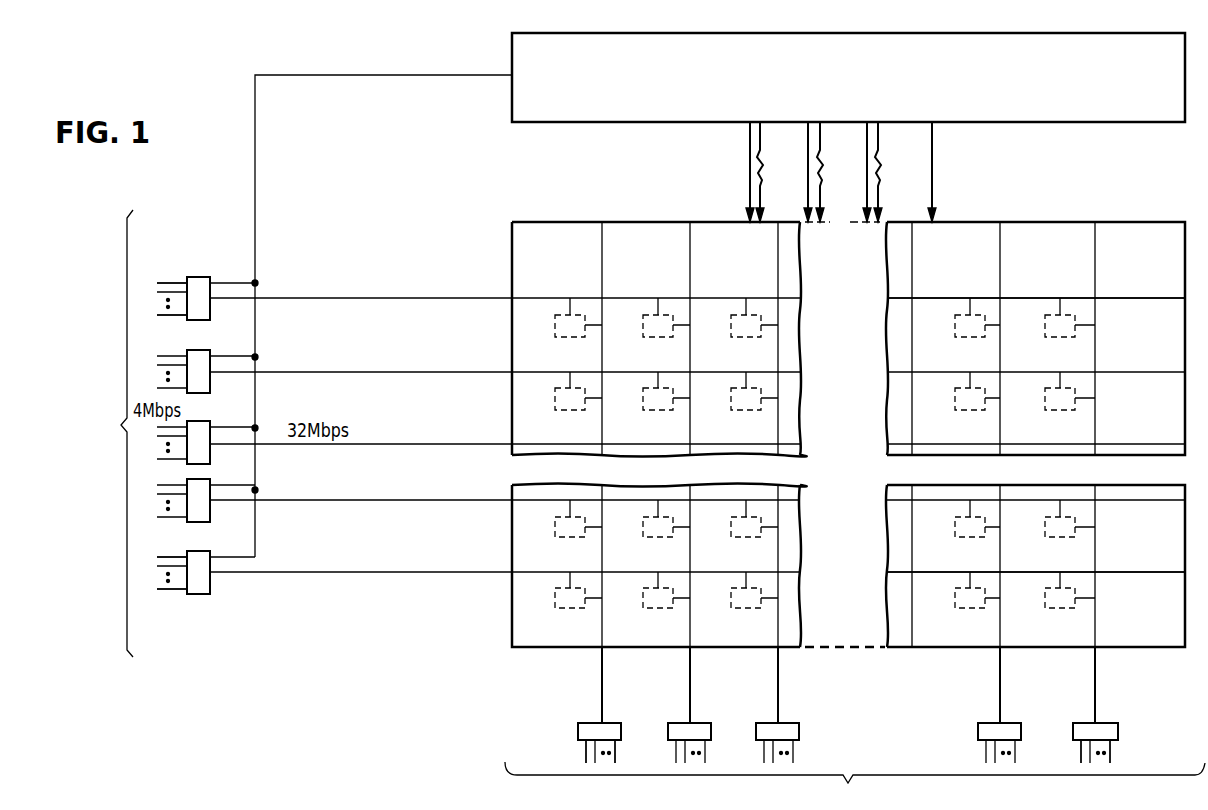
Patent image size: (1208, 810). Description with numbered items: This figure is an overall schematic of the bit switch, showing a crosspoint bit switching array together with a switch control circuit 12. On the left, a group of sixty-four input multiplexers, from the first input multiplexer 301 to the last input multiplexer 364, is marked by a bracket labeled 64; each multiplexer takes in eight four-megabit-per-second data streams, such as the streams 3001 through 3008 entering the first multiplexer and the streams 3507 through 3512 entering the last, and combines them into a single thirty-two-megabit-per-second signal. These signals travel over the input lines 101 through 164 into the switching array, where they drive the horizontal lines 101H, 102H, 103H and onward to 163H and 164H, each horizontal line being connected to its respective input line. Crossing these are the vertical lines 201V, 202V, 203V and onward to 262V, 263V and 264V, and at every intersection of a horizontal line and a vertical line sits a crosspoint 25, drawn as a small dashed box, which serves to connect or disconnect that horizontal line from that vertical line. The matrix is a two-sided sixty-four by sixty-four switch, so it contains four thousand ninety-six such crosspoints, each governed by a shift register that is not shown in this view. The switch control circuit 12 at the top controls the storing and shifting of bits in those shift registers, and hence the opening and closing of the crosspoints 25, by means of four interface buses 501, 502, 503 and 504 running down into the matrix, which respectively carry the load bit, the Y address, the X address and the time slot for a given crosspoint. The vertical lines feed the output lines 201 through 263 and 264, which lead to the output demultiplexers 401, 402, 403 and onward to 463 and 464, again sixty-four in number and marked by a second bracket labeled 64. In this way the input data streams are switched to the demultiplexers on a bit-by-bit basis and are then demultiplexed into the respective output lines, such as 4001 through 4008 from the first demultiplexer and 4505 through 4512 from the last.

The switch control circuit 12 is at (518, 47).
The number of lines in the two-sided switch 64 is at (646, 510).
The input multiplexer 301 is at (194, 277).
The input multiplexer 364 is at (206, 598).
The 4 Mbps data stream 3001 is at (167, 283).
The 4 Mbps data stream 3008 is at (178, 315).
The 4 Mbps data stream 3507 is at (180, 557).
The 4 Mbps data stream 3512 is at (178, 596).
The input line 101 is at (395, 297).
The input line 164 is at (449, 583).
The horizontal line 101H is at (1115, 297).
The horizontal line 102H is at (1115, 371).
The horizontal line 103H is at (1112, 444).
The horizontal line 163H is at (1111, 503).
The horizontal line 164H is at (1110, 572).
The vertical line 201V is at (604, 258).
The vertical line 202V is at (692, 258).
The vertical line 203V is at (779, 257).
The vertical line 262V is at (913, 258).
The vertical line 263V is at (1003, 258).
The vertical line 264V is at (1097, 258).
The crosspoint 25 is at (581, 334).
The interface bus 501 is at (933, 171).
The interface bus 502 is at (868, 183).
The interface bus 503 is at (808, 183).
The interface bus 504 is at (749, 183).
The output line 201 is at (602, 673).
The output line 263 is at (1000, 673).
The output line 264 is at (1095, 677).
The output demultiplexer 401 is at (578, 731).
The output demultiplexer 402 is at (668, 732).
The output demultiplexer 403 is at (756, 732).
The output demultiplexer 463 is at (978, 731).
The output demultiplexer 464 is at (1118, 731).
The output line 4001 is at (586, 755).
The output line 4008 is at (614, 756).
The output line 4505 is at (1081, 757).
The output line 4512 is at (1110, 757).